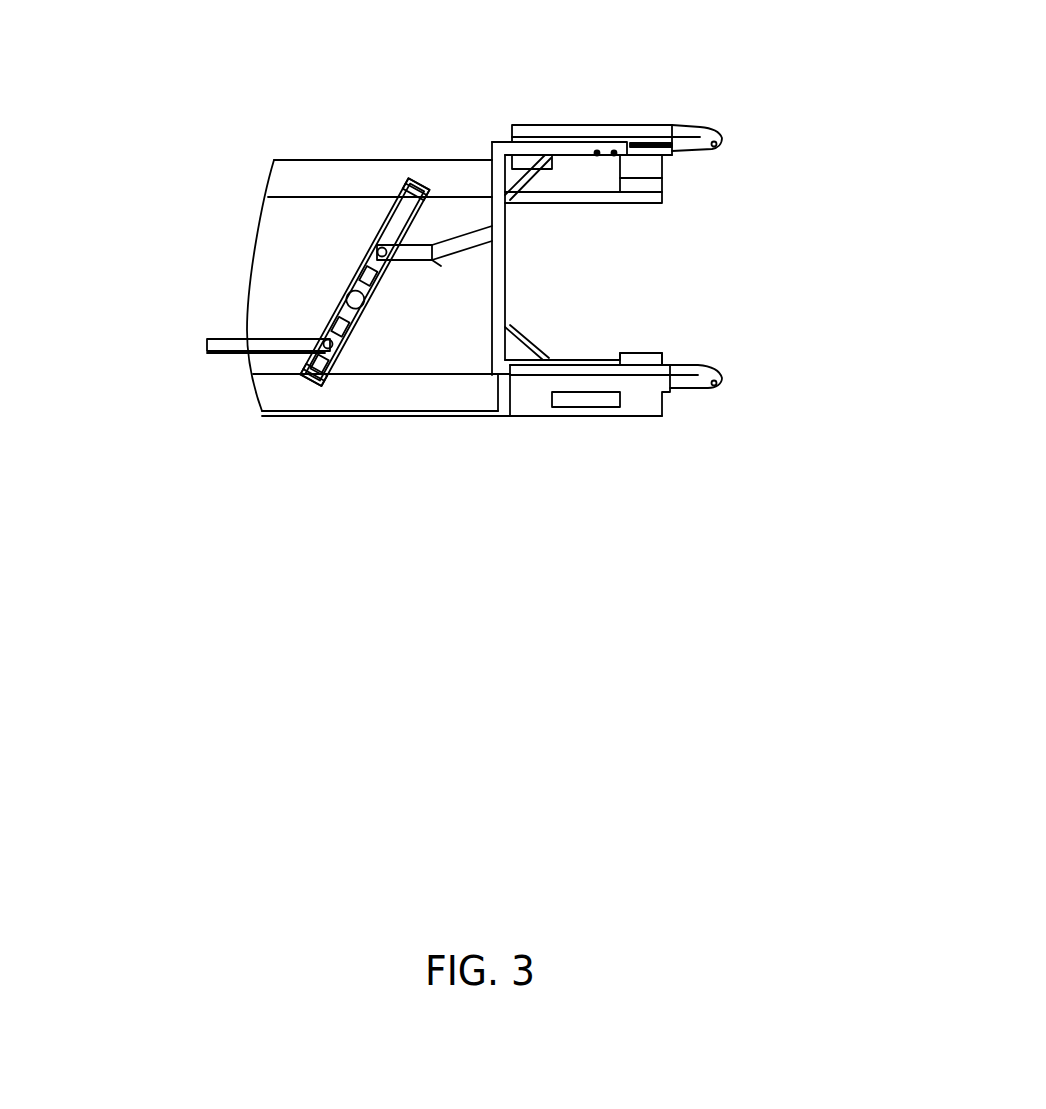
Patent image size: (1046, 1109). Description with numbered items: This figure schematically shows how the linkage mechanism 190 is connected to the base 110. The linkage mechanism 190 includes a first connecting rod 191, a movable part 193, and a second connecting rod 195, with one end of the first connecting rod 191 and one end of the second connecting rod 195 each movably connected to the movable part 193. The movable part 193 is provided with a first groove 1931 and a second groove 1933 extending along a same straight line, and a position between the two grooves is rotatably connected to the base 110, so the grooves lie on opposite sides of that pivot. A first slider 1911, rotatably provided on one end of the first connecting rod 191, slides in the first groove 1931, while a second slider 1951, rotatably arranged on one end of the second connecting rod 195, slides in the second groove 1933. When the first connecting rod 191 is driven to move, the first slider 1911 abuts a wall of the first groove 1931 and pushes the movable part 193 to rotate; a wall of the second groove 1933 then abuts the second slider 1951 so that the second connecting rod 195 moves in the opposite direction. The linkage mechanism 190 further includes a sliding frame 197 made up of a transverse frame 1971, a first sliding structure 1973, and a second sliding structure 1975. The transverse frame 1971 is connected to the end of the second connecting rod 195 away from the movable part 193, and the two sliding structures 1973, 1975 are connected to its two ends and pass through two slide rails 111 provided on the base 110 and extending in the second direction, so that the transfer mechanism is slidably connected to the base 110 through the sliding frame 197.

The base 110 is at (375, 170).
The slide rail 111 is at (639, 145).
The linkage mechanism 190 is at (287, 404).
The first connecting rod 191 is at (218, 340).
The movable part 193 is at (345, 285).
The first slider 1911 is at (340, 340).
The first groove 1931 is at (329, 377).
The second groove 1933 is at (420, 185).
The second connecting rod 195 is at (485, 236).
The second slider 1951 is at (373, 272).
The sliding frame 197 is at (707, 406).
The transverse frame 1971 is at (500, 283).
The first sliding structure 1973 is at (712, 140).
The second sliding structure 1975 is at (708, 376).